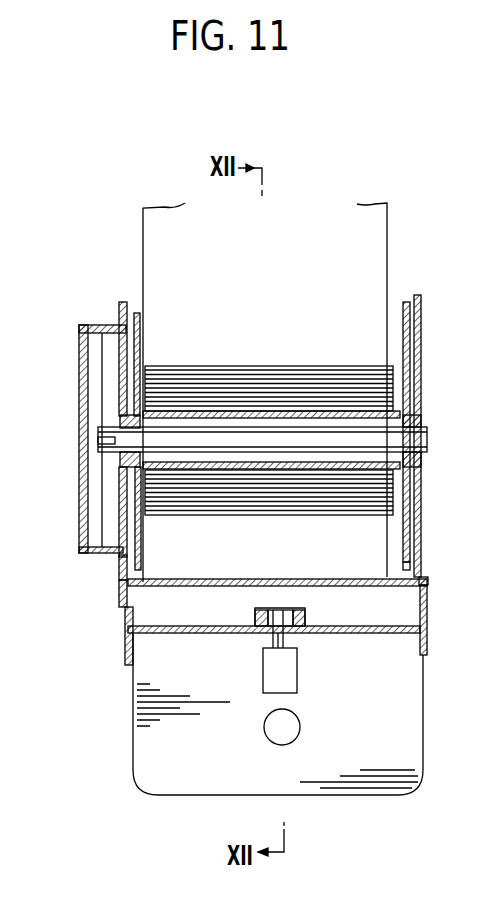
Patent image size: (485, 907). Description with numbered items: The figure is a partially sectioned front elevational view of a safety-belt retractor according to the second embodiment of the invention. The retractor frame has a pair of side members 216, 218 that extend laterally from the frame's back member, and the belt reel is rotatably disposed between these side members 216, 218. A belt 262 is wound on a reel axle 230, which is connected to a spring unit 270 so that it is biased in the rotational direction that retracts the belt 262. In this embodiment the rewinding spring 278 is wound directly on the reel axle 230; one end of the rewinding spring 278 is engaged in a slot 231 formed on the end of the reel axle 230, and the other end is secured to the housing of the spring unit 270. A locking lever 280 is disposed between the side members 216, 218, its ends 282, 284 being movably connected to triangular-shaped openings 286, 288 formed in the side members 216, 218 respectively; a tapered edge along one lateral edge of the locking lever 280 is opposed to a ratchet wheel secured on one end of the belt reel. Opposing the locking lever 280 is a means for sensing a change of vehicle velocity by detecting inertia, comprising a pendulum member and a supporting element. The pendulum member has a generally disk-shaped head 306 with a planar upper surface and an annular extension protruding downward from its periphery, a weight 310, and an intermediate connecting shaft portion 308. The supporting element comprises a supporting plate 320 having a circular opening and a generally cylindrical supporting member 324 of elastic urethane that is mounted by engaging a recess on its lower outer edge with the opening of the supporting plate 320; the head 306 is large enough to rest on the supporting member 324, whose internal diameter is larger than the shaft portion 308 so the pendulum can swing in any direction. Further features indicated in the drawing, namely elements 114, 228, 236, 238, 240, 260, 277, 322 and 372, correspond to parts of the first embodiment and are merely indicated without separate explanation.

The housing 114 is at (408, 684).
The side member 216 is at (126, 624).
The side member 218 is at (421, 372).
The coil 228 is at (340, 402).
The reel axle 230 is at (262, 440).
The slot 231 is at (100, 440).
The inner wall 236 is at (141, 532).
The inner wall 238 is at (410, 492).
The stop 240 is at (411, 566).
The hub 260 is at (412, 458).
The belt 262 is at (387, 221).
The spring unit 270 is at (80, 355).
The shaft 277 is at (122, 425).
The rewinding spring 278 is at (113, 508).
The locking lever 280 is at (306, 578).
The end of locking lever 282 is at (122, 586).
The end of locking lever 284 is at (427, 585).
The triangular-shaped opening 286 is at (120, 566).
The triangular-shaped opening 288 is at (421, 562).
The head 306 is at (290, 606).
The intermediate connecting shaft portion 308 is at (286, 640).
The weight 310 is at (298, 680).
The supporting plate 320 is at (272, 629).
The bolt shank 322 is at (271, 644).
The supporting member 324 is at (256, 616).
The opening 372 is at (300, 726).